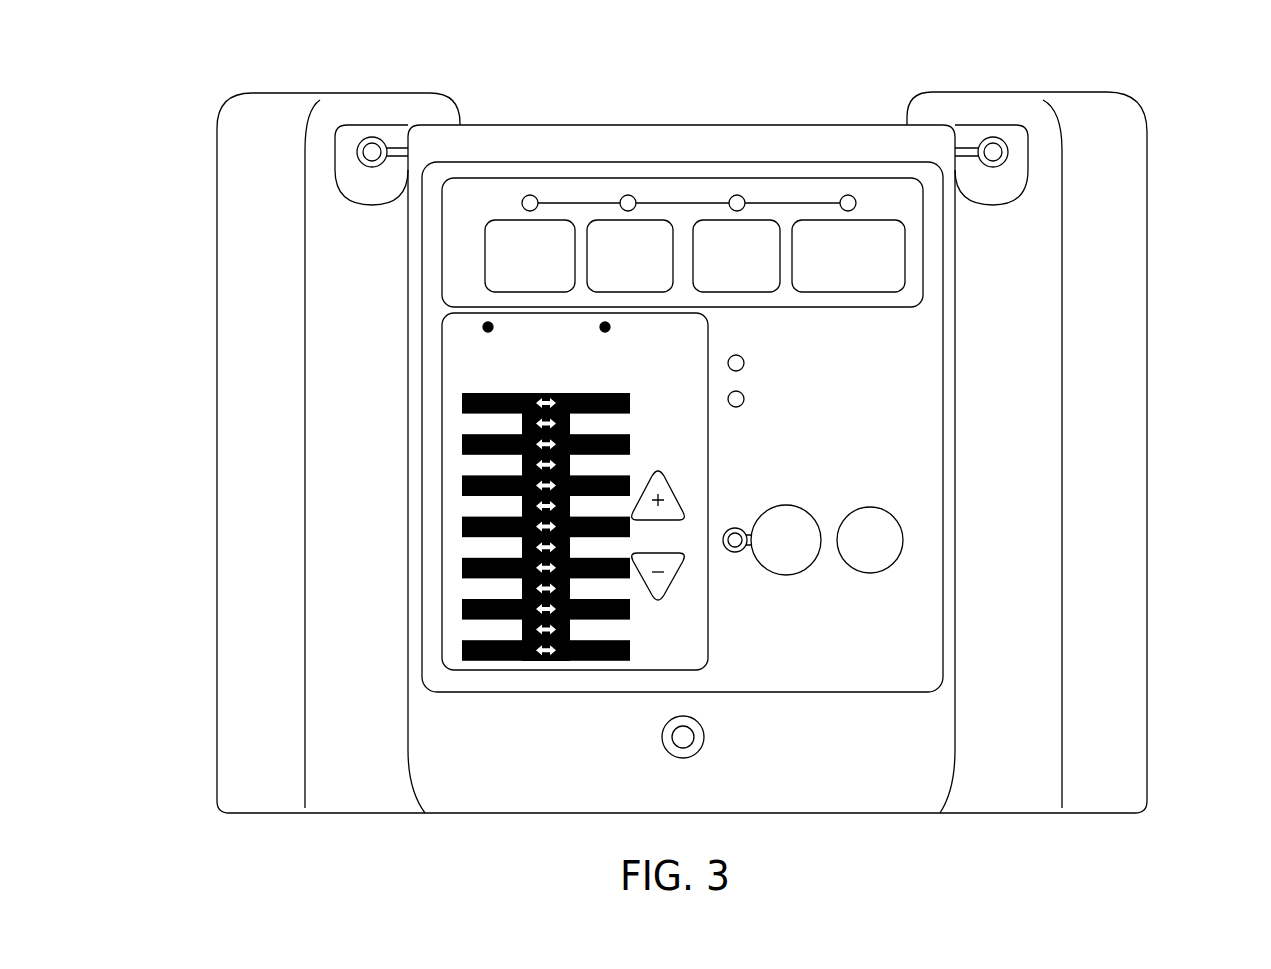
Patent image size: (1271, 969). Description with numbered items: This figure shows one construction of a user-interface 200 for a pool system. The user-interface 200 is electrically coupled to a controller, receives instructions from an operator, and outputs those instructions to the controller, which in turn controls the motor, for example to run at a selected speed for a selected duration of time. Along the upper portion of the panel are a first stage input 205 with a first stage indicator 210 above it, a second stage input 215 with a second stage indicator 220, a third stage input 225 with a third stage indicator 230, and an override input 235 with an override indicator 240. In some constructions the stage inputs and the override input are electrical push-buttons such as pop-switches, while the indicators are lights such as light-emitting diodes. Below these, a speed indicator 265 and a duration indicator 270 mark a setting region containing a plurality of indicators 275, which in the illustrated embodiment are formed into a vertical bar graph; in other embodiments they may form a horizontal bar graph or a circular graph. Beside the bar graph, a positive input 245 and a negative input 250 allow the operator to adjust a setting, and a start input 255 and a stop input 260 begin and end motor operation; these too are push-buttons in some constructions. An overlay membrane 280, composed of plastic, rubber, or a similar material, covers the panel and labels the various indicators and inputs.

The user-interface 200 is at (1174, 132).
The first stage input 205 is at (497, 270).
The first stage indicator 210 is at (530, 195).
The second stage input 215 is at (649, 228).
The second stage indicator 220 is at (628, 195).
The third stage input 225 is at (760, 228).
The third stage indicator 230 is at (737, 195).
The override input 235 is at (866, 228).
The override indicator 240 is at (848, 195).
The positive input 245 is at (670, 511).
The negative input 250 is at (662, 582).
The start input 255 is at (796, 562).
The stop input 260 is at (866, 520).
The speed indicator 265 is at (610, 327).
The duration indicator 270 is at (483, 327).
The plurality of indicators 275 is at (518, 580).
The overlay membrane 280 is at (615, 692).